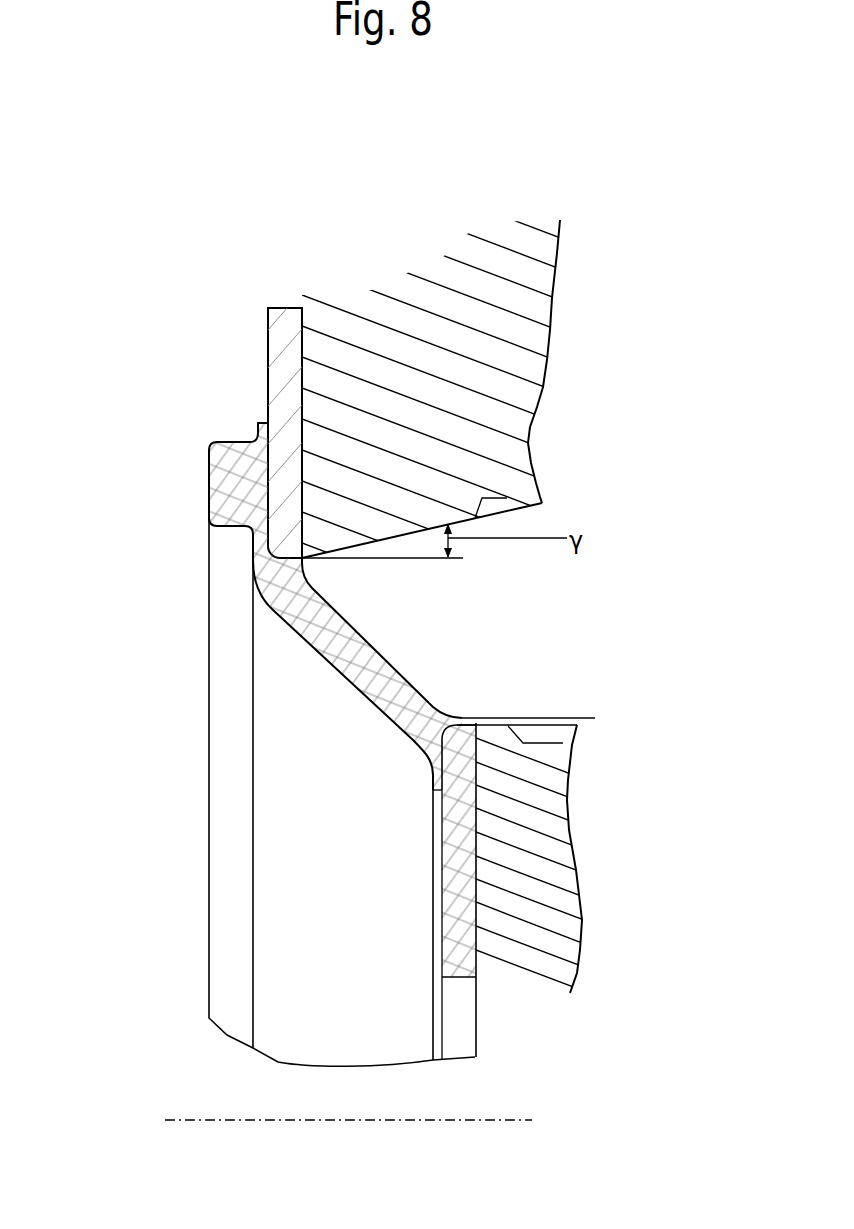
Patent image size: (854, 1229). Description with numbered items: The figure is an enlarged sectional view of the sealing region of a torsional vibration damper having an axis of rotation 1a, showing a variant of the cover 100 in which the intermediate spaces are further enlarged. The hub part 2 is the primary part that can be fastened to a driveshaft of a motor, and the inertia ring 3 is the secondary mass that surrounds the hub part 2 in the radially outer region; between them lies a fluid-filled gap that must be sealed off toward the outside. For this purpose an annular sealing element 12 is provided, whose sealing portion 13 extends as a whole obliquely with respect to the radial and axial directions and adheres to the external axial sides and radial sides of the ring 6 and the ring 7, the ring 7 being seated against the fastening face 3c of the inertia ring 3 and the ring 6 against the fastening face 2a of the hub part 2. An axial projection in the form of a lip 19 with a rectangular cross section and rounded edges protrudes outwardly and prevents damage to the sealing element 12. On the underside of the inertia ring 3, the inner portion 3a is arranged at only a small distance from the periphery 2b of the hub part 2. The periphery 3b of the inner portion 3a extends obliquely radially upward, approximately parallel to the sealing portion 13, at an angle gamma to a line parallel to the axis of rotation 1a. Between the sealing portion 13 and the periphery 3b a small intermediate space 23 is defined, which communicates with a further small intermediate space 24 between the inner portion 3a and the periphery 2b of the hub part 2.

The cover 100 is at (274, 250).
The inertia ring 3 is at (477, 288).
The inner portion 3a is at (430, 458).
The periphery 3b is at (507, 498).
The fastening face 3c is at (292, 370).
The ring 7 is at (282, 328).
The lip 19 is at (235, 486).
The sealing element 12 is at (275, 620).
The sealing portion 13 is at (318, 641).
The intermediate space 23 is at (395, 627).
The intermediate space 24 is at (525, 613).
The hub part 2 is at (553, 832).
The fastening face 2a is at (460, 813).
The periphery 2b is at (570, 748).
The ring 6 is at (452, 919).
The axis of rotation 1a is at (515, 1120).